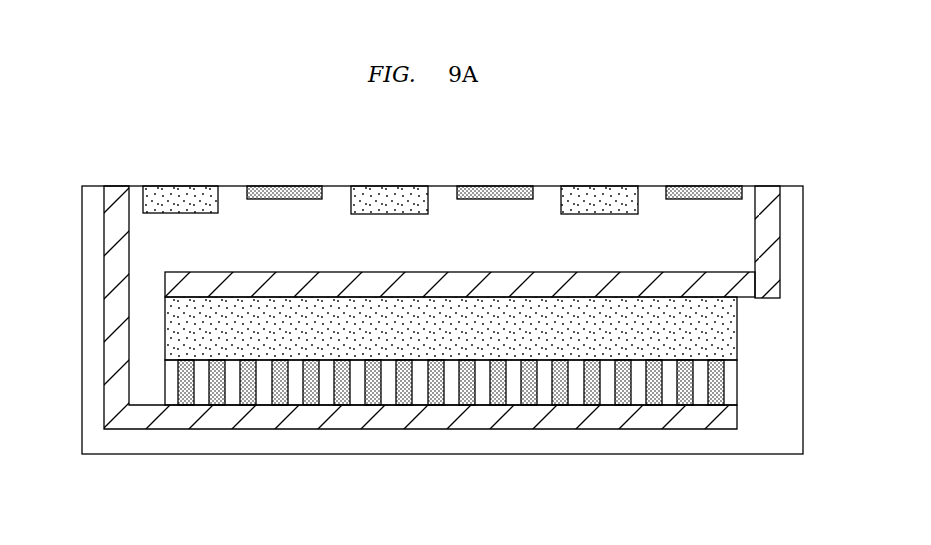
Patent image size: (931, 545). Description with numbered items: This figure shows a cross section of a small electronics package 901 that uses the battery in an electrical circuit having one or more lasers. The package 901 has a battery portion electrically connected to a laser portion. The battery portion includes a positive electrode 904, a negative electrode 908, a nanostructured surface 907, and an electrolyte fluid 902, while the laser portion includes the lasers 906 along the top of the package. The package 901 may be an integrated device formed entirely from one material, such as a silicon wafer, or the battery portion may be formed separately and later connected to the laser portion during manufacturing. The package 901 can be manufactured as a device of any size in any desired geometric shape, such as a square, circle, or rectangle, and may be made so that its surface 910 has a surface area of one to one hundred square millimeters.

The small electronics package 901 is at (803, 241).
The electrolyte fluid 902 is at (691, 303).
The positive electrode 904 is at (771, 197).
The lasers 906 is at (185, 193).
The nanostructured surface 907 is at (403, 406).
The negative electrode 908 is at (262, 422).
The surface 910 is at (340, 197).